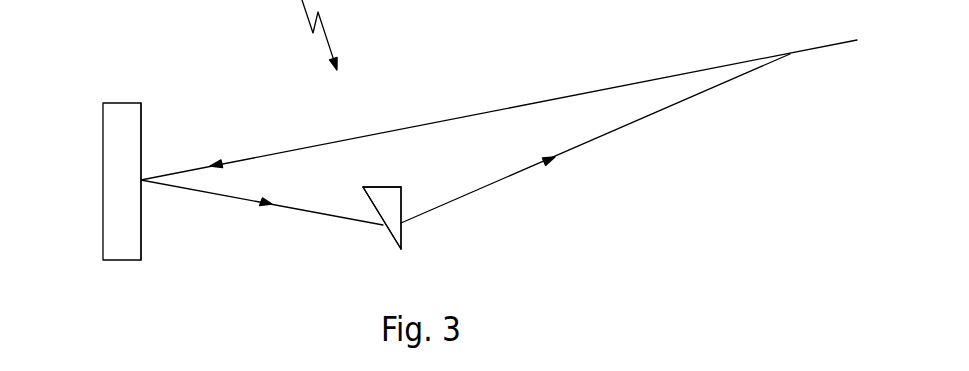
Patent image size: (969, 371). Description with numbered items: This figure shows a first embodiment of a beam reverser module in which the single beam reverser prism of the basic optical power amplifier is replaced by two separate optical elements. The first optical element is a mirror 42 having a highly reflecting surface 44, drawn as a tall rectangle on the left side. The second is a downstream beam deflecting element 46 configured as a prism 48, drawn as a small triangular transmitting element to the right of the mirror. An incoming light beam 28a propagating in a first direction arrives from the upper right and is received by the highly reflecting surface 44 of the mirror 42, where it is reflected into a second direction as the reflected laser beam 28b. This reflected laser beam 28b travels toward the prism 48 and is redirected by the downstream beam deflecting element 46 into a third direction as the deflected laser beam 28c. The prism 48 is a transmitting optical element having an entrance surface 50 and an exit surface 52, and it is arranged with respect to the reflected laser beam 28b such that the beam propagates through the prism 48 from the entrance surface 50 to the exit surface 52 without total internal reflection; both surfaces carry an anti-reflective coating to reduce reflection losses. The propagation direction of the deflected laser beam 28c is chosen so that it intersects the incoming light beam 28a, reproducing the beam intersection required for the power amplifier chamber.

The incoming light beam 28a is at (270, 152).
The reflected laser beam 28b is at (215, 193).
The deflected laser beam 28c is at (520, 173).
The mirror 42 is at (115, 142).
The highly reflecting surface 44 is at (152, 126).
The downstream beam deflecting element 46 is at (364, 238).
The prism 48 is at (390, 210).
The entrance surface 50 is at (361, 205).
The exit surface 52 is at (408, 201).